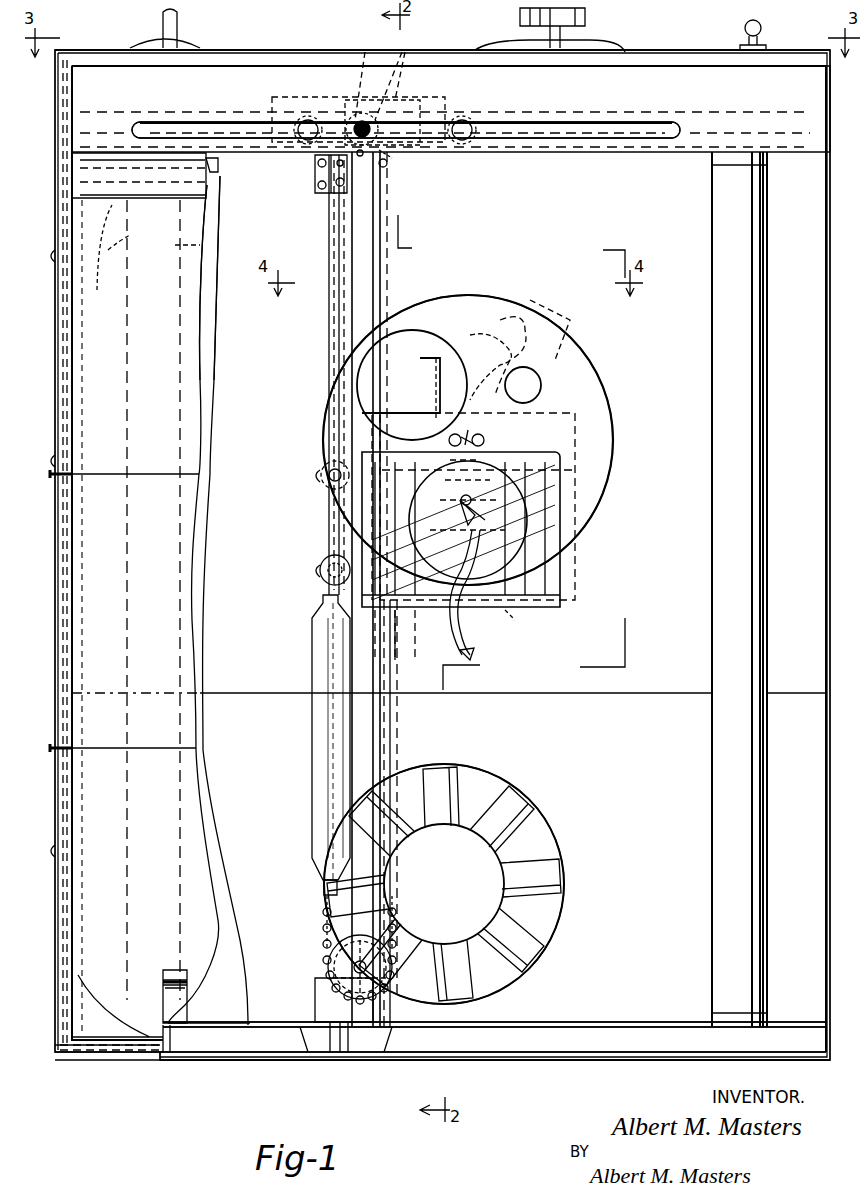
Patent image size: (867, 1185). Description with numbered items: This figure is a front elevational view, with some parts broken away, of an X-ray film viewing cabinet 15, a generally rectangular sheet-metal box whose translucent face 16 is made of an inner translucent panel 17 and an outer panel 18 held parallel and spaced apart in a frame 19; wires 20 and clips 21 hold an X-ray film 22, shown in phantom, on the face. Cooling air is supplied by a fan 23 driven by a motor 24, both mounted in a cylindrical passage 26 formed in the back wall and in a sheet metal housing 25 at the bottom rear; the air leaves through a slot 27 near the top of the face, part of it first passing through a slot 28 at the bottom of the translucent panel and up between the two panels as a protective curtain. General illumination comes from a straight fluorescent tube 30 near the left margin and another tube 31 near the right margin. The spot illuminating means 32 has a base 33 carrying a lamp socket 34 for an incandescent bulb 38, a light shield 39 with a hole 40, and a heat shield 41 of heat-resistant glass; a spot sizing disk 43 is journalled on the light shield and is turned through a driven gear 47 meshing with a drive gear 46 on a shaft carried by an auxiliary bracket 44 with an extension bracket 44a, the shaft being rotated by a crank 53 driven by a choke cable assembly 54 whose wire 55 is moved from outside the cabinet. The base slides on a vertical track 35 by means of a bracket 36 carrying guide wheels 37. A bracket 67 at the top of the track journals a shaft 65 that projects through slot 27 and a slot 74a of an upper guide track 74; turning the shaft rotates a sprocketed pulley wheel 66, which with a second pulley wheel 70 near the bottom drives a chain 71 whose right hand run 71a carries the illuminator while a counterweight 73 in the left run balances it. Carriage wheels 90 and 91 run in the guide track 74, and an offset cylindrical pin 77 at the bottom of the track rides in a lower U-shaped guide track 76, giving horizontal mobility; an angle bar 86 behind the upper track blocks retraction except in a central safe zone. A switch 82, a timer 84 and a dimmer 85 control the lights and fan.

The cabinet 15 is at (698, 52).
The face of the cabinet 16 is at (50, 326).
The inner translucent panel 17 is at (225, 1020).
The outer panel 18 is at (95, 1050).
The frame 19 is at (110, 48).
The wires 20 is at (192, 472).
The clips 21 is at (172, 968).
The X-ray film 22 is at (135, 385).
The fan 23 is at (542, 830).
The motor 24 is at (520, 905).
The sheet metal housing 25 is at (449, 680).
The cylindrical passage 26 is at (470, 765).
The slot 27 is at (128, 95).
The slot 28 is at (178, 1048).
The fluorescent tube 30 is at (200, 242).
The fluorescent tube 31 is at (765, 404).
The spot illuminating means 32 is at (592, 556).
The base 33 is at (560, 600).
The lamp socket 34 is at (510, 615).
The track 35 is at (374, 272).
The bracket 36 is at (335, 528).
The guide wheels 37 is at (320, 472).
The incandescent bulb 38 is at (583, 425).
The light shield 39 is at (585, 483).
The hole 40 is at (552, 545).
The heat shield 41 is at (560, 578).
The spot sizing disk 43 is at (604, 386).
The auxiliary bracket 44 is at (402, 635).
The extension bracket 44a is at (565, 328).
The drive gear 46 is at (430, 358).
The driven gear 47 is at (428, 400).
The crank 53 is at (530, 300).
The choke cable assembly 54 is at (463, 625).
The wire 55 is at (478, 655).
The shaft 65 is at (404, 48).
The pulley wheel 66 is at (368, 48).
The bracket 67 is at (388, 155).
The second pulley wheel 70 is at (325, 968).
The chain 71 is at (326, 914).
The right hand run of the chain 71a is at (396, 728).
The counterweight 73 is at (312, 808).
The guide track 74 is at (625, 152).
The slot 74a is at (585, 137).
The lower guide track 76 is at (518, 1045).
The offset cylindrical pin 77 is at (325, 1052).
The switch 82 is at (764, 28).
The timer 84 is at (178, 32).
The dimmer 85 is at (588, 16).
The angle bar 86 is at (215, 137).
The wheel 90 is at (305, 137).
The wheel 91 is at (465, 137).